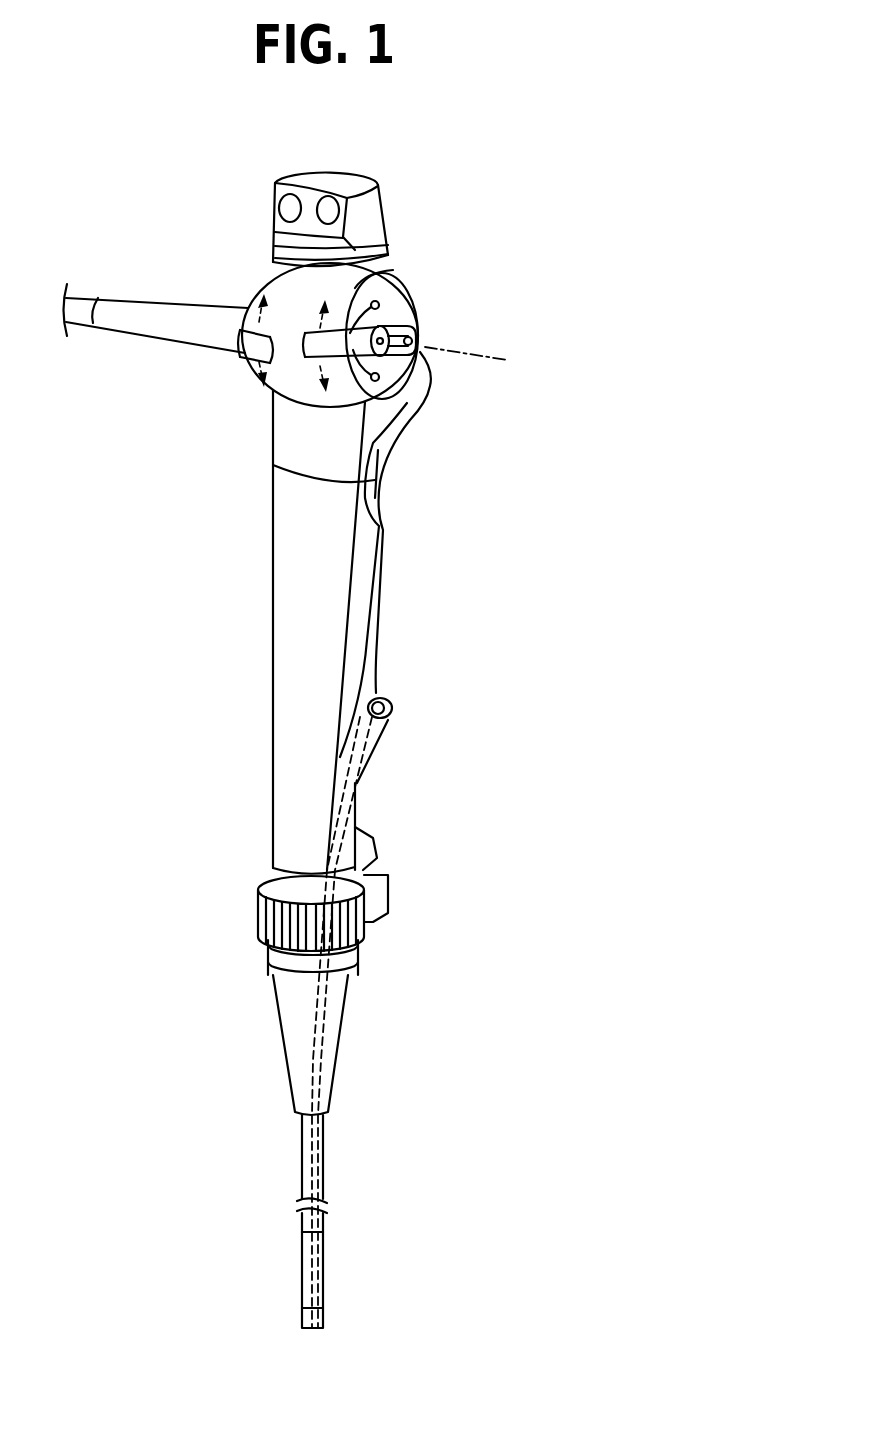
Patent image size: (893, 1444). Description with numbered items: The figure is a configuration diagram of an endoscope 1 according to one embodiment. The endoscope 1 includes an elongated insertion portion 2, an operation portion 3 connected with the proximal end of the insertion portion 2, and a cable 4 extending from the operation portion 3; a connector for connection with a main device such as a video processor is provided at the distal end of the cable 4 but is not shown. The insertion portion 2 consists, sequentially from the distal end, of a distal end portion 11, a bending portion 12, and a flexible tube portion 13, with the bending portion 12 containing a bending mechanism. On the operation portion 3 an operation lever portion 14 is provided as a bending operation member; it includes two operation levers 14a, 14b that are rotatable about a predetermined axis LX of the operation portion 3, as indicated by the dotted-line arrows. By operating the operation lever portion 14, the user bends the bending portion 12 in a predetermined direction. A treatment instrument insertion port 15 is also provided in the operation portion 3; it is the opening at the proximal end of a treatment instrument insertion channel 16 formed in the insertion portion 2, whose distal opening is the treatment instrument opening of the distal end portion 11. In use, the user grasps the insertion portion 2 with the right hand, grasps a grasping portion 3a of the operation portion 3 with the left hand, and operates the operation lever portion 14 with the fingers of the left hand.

The endoscope 1 is at (130, 537).
The insertion portion 2 is at (382, 1175).
The operation portion 3 is at (480, 262).
The grasping portion 3a is at (287, 660).
The cable 4 is at (81, 300).
The distal end portion 11 is at (307, 1320).
The bending portion 12 is at (307, 1268).
The flexible tube portion 13 is at (307, 1167).
The operation lever portion 14 is at (137, 401).
The operation lever 14a is at (247, 345).
The operation lever 14b is at (307, 360).
The treatment instrument insertion port 15 is at (396, 700).
The treatment instrument insertion channel 16 is at (323, 1027).
The predetermined axis LX is at (440, 348).